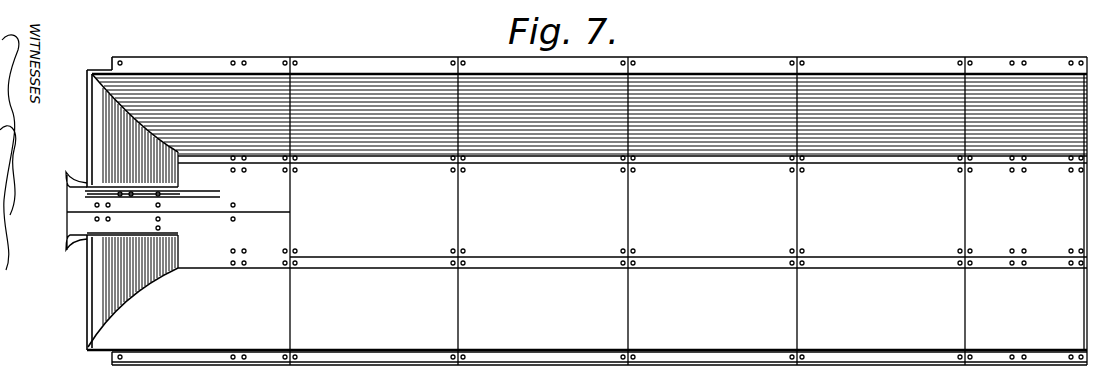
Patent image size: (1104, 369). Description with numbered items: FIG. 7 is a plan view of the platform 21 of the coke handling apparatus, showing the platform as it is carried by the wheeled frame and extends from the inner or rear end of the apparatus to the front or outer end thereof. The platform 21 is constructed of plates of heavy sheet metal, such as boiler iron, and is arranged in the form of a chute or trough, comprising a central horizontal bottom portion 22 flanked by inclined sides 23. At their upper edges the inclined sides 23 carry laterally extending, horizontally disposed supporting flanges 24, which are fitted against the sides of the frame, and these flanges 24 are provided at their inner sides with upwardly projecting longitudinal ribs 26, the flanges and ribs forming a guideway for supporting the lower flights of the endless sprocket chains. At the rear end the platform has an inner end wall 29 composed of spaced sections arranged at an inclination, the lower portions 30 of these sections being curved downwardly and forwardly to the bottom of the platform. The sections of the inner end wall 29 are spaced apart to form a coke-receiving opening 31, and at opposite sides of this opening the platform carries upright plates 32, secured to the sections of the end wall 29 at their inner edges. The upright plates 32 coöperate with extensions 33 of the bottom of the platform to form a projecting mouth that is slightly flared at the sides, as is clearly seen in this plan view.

The platform 21 is at (178, 210).
The central horizontal bottom portion 22 is at (632, 210).
The inclined sides 23 is at (591, 196).
The supporting flanges 24 is at (378, 49).
The longitudinal ribs 26 is at (733, 50).
The inner end wall 29 is at (92, 158).
The lower portions 30 is at (155, 172).
The coke-receiving opening 31 is at (132, 219).
The upright plates 32 is at (110, 235).
The extensions 33 is at (68, 246).